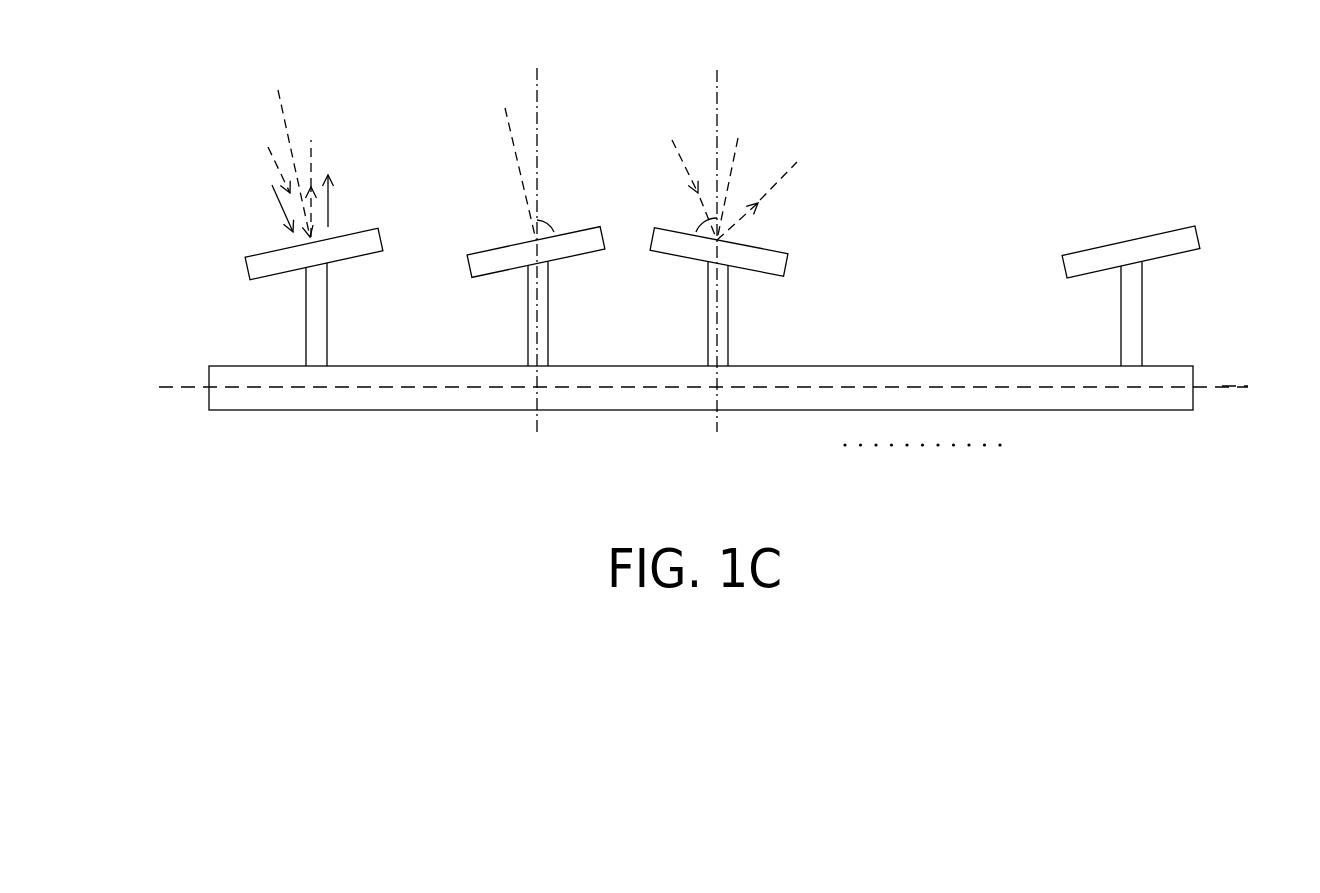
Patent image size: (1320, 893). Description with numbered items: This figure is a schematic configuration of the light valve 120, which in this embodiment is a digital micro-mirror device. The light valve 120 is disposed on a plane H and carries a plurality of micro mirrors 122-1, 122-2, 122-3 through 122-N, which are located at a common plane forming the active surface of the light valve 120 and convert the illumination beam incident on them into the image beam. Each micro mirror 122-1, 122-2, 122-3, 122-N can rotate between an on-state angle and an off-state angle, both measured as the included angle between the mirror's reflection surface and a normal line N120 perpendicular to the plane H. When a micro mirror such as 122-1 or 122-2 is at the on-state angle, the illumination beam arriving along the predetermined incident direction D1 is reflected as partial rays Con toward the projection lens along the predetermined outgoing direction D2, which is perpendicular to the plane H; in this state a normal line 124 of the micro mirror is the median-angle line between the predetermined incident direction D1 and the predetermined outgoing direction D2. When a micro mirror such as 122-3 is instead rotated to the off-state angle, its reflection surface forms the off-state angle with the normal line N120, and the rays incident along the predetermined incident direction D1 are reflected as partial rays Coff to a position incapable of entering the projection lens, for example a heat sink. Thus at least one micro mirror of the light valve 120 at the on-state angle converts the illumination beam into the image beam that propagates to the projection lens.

The light valve 120 is at (190, 337).
The micro mirror 122-1 is at (277, 324).
The micro mirror 122-2 is at (500, 324).
The micro mirror 122-3 is at (688, 324).
The micro mirror 122-N is at (1163, 332).
The normal line of the micro mirrors 124 is at (292, 147).
The normal line N120 is at (540, 117).
The partial rays Con is at (290, 167).
The partial rays Coff is at (746, 175).
The predetermined incident direction D1 is at (277, 205).
The predetermined outgoing direction D2 is at (330, 204).
The plane H is at (1222, 386).